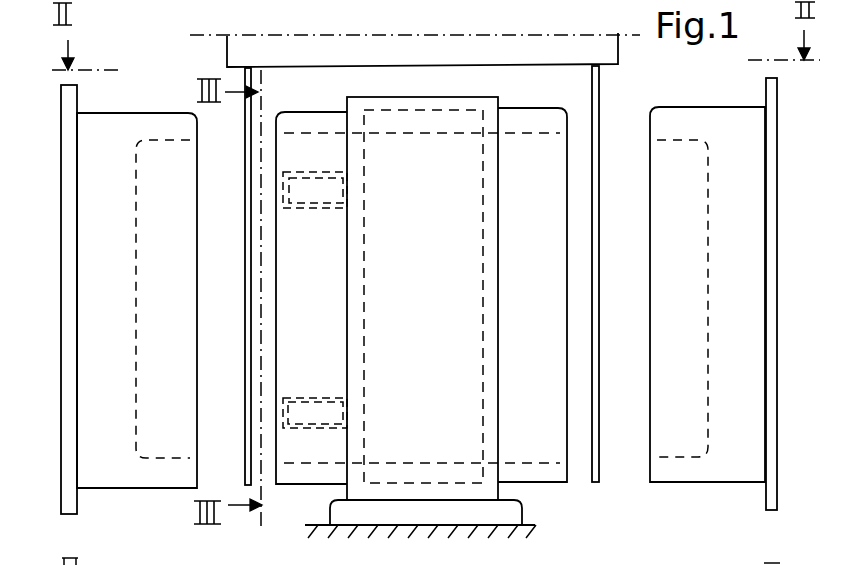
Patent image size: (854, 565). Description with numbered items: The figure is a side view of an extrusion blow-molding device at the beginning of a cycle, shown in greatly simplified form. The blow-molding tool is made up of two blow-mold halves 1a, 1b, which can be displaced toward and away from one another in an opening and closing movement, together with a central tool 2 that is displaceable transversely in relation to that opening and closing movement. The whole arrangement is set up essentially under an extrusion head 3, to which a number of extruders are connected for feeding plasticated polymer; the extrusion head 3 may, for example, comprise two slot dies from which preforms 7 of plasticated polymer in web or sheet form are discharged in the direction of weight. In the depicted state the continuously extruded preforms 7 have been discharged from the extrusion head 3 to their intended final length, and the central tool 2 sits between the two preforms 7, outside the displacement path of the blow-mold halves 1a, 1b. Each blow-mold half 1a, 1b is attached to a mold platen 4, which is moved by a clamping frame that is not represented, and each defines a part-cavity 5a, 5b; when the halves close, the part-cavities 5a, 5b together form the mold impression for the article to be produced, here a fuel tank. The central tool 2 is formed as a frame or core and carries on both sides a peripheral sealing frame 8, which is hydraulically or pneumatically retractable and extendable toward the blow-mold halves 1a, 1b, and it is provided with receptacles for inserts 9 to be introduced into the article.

The blow-mold half 1a is at (124, 122).
The blow-mold half 1b is at (713, 116).
The central tool 2 is at (390, 160).
The extrusion head 3 is at (452, 55).
The mold platen 4 is at (70, 448).
The part-cavity 5a is at (184, 371).
The part-cavity 5b is at (692, 376).
The preform 7 is at (245, 145).
The sealing frame 8 is at (285, 267).
The insert 9 is at (289, 194).